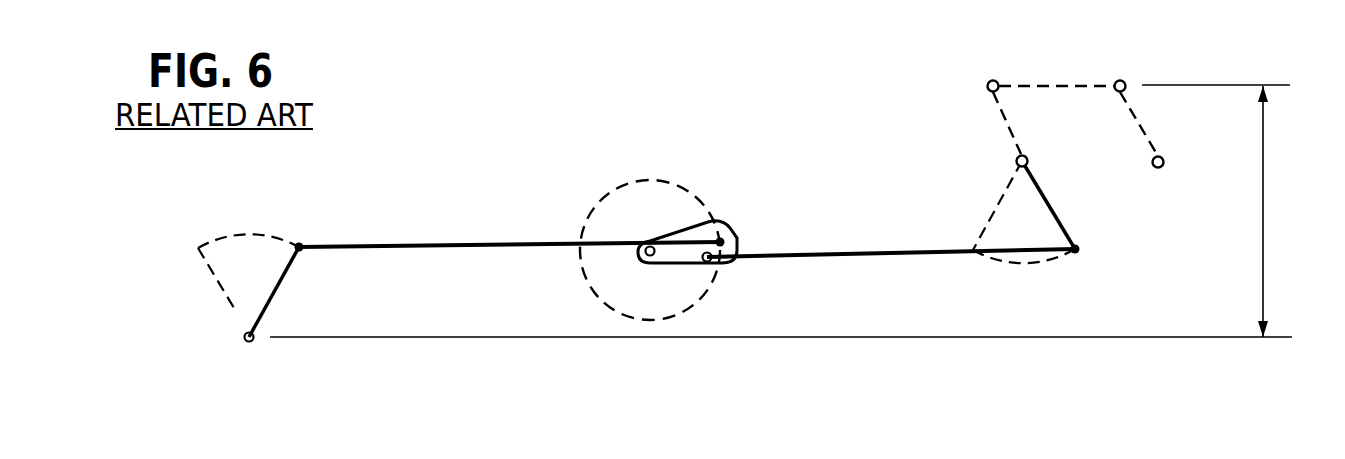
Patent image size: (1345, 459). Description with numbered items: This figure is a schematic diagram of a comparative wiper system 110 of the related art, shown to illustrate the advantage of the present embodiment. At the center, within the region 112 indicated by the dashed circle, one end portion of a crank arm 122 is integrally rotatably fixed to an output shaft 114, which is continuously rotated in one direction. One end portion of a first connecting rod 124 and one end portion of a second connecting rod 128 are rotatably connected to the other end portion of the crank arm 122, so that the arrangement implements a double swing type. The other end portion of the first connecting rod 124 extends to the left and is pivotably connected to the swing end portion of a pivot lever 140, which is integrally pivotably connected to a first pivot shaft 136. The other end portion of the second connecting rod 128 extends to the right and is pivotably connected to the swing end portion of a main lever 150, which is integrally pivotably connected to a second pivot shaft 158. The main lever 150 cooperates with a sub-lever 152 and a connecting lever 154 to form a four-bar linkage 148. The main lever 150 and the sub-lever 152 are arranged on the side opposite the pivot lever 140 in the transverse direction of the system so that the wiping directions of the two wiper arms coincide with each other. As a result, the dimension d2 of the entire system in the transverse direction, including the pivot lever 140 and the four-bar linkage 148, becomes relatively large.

The comparative wiper system 110 is at (630, 214).
The pivot region 112 is at (672, 179).
The output shaft 114 is at (638, 253).
The crank arm 122 is at (695, 265).
The first connecting rod 124 is at (432, 243).
The second connecting rod 128 is at (857, 252).
The first pivot shaft 136 is at (249, 342).
The pivot lever 140 is at (278, 292).
The four-bar linkage 148 is at (1094, 90).
The main lever 150 is at (1050, 198).
The sub-lever 152 is at (1137, 113).
The connecting lever 154 is at (1062, 85).
The second pivot shaft 158 is at (1026, 156).
The dimension of the entire system in the transverse direction d2 is at (1265, 213).